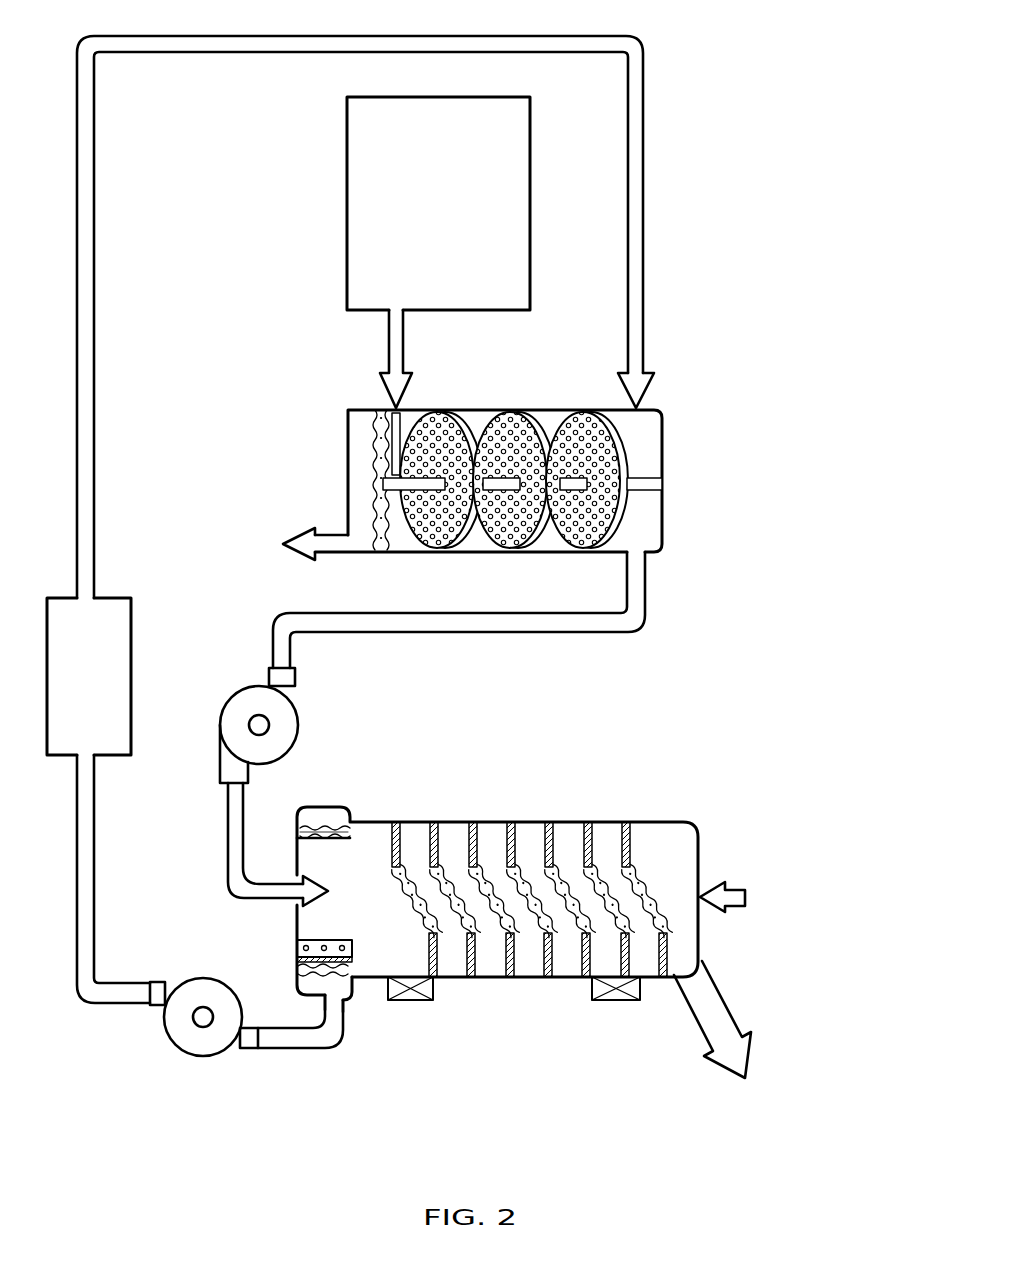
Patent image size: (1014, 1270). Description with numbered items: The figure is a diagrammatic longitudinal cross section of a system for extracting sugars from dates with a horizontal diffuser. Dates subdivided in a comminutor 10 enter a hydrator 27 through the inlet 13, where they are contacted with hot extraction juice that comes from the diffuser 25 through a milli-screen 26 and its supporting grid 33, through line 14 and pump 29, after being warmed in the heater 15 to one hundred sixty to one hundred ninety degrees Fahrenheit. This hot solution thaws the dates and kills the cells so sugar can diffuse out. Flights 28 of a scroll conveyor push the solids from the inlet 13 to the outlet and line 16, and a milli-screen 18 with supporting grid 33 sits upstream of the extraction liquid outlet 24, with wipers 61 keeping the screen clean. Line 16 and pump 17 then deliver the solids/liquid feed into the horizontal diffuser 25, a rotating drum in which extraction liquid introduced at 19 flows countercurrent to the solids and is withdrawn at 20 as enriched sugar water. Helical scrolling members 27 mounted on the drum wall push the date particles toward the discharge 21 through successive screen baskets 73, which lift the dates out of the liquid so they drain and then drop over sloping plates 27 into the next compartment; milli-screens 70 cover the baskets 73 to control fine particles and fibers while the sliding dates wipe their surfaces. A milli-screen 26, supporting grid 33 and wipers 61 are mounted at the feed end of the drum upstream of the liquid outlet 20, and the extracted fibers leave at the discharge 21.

The comminutor 10 is at (347, 163).
The inlet 13 is at (398, 410).
The line 14 is at (94, 380).
The heater 15 is at (113, 700).
The line 16 is at (462, 625).
The pump 17 is at (283, 715).
The milli-screen 18 is at (390, 535).
The extraction liquid inlet 19 is at (733, 892).
The extraction liquid outlet 20 is at (345, 1010).
The discharge 21 is at (735, 1033).
The extraction liquid outlet 24 is at (300, 538).
The horizontal diffuser 25 is at (490, 822).
The milli-screen 26 is at (332, 845).
The hydrator 27 is at (665, 425).
The flights 28 is at (460, 425).
The pump 29 is at (207, 1040).
The supporting grid 33 is at (373, 520).
The wiper 61 is at (402, 427).
The milli-screen 70 is at (400, 880).
The screen basket 73 is at (425, 918).